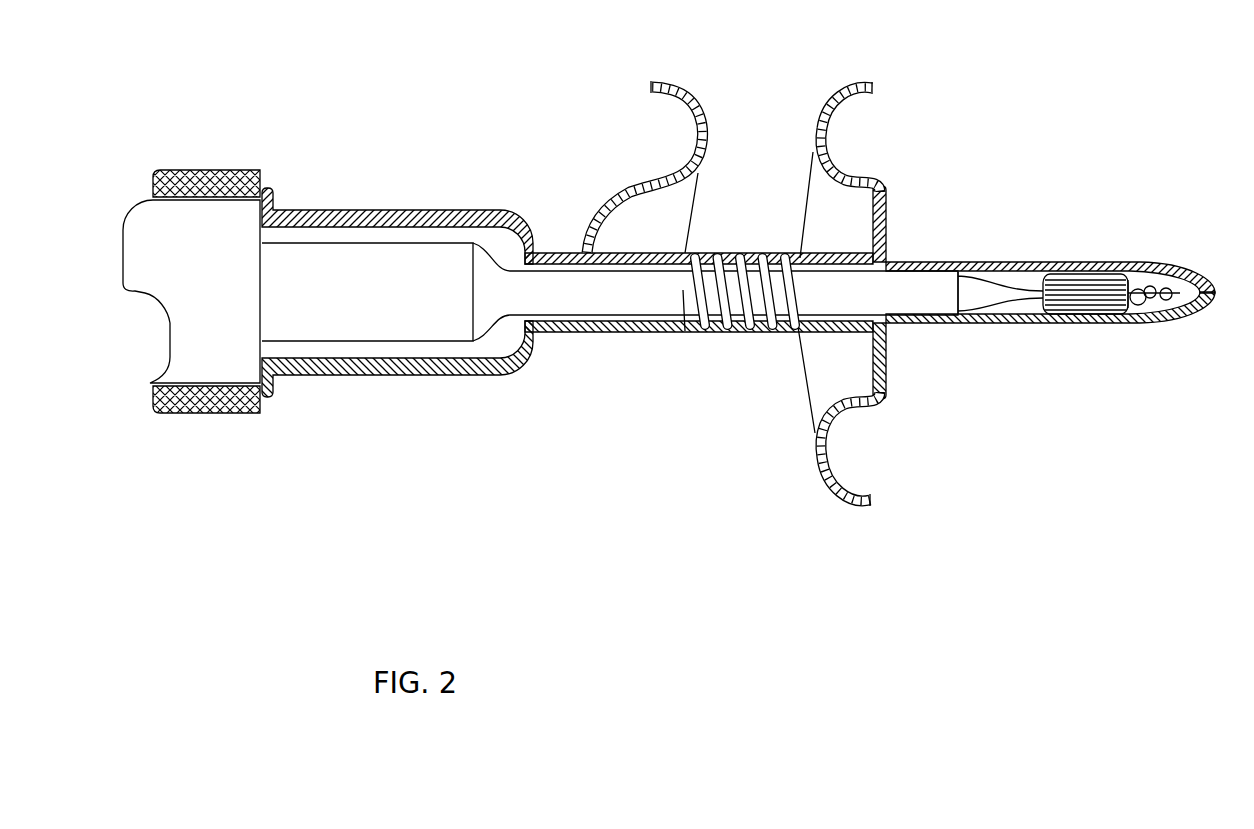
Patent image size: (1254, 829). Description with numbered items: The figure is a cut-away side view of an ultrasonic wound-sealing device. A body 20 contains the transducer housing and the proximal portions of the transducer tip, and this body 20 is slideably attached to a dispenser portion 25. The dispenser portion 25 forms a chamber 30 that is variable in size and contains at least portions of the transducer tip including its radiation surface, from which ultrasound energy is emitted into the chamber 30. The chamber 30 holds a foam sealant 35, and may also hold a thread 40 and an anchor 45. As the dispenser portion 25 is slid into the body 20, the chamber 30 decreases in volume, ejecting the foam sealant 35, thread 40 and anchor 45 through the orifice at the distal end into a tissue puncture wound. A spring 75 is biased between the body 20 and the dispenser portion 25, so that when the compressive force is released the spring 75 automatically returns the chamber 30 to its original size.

The body 20 is at (377, 210).
The dispenser portion 25 is at (992, 263).
The chamber 30 is at (1027, 280).
The foam sealant 35 is at (1068, 323).
The thread 40 is at (1128, 307).
The anchor 45 is at (1152, 305).
The spring 75 is at (762, 262).